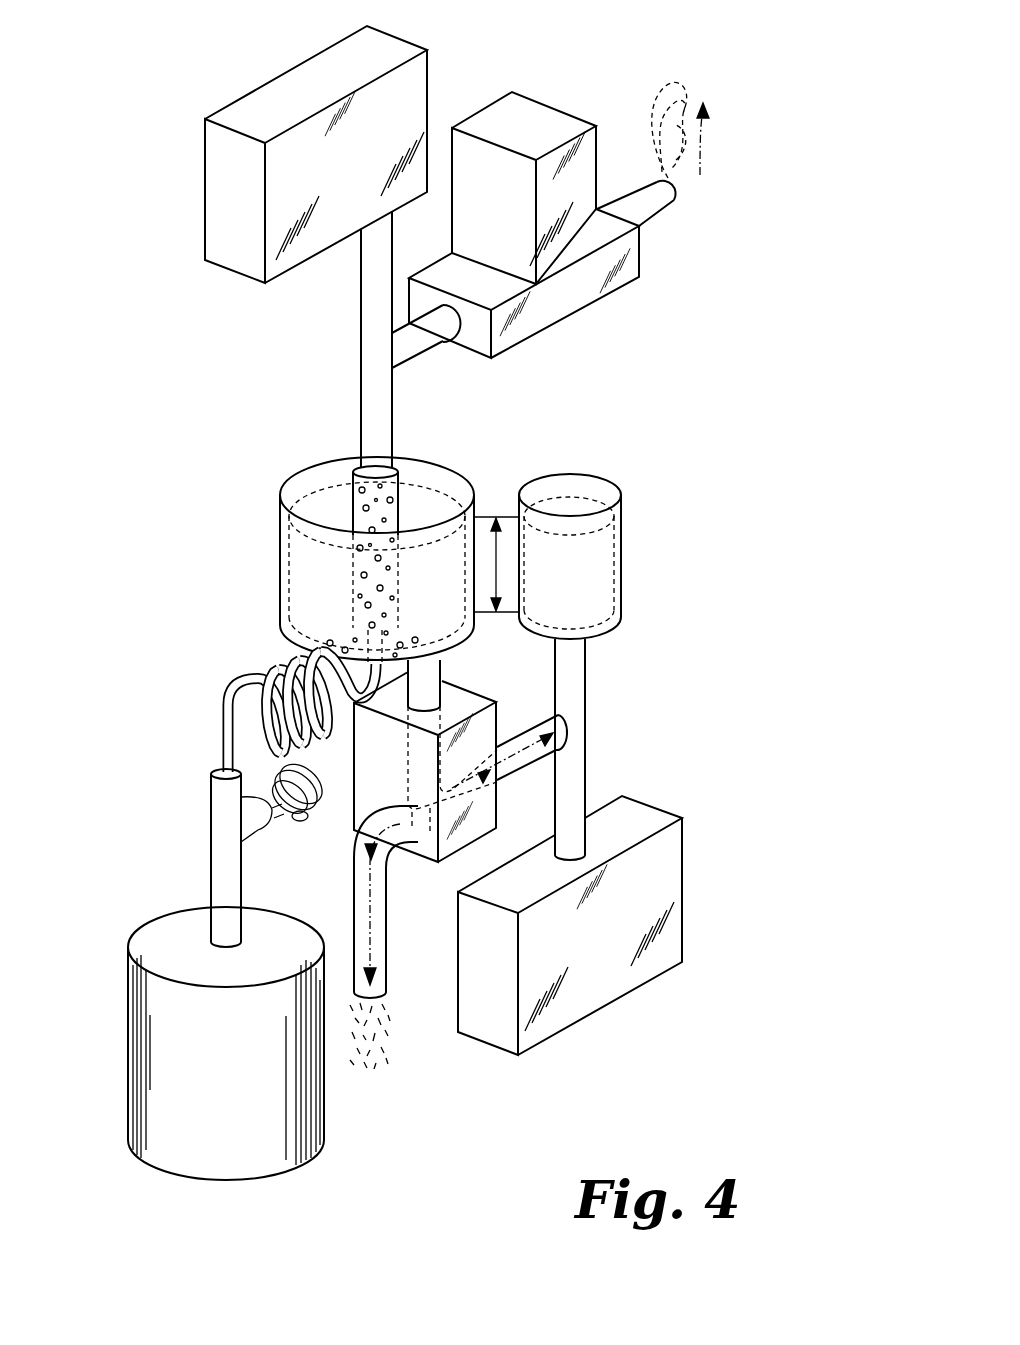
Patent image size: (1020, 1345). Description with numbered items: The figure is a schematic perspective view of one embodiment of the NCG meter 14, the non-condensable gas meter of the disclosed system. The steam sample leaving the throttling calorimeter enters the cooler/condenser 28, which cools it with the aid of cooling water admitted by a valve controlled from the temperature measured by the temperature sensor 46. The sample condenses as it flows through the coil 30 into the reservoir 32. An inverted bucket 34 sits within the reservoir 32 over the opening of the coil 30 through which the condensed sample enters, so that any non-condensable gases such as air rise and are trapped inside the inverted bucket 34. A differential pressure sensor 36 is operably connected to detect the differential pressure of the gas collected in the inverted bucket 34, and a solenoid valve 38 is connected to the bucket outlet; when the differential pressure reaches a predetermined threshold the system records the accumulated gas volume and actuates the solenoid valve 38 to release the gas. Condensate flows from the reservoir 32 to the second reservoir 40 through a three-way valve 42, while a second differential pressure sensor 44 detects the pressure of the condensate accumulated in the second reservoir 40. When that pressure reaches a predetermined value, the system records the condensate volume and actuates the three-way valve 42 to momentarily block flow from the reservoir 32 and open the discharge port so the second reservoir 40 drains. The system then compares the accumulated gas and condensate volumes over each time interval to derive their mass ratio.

The NCG meter 14 is at (199, 504).
The cooler/condenser 28 is at (165, 910).
The coil 30 is at (250, 672).
The reservoir 32 is at (279, 495).
The inverted bucket 34 is at (398, 506).
The differential pressure sensor 36 is at (205, 190).
The solenoid valve 38 is at (550, 103).
The second reservoir 40 is at (621, 561).
The three-way valve 42 is at (397, 850).
The second differential pressure sensor 44 is at (682, 890).
The temperature sensor 46 is at (295, 818).